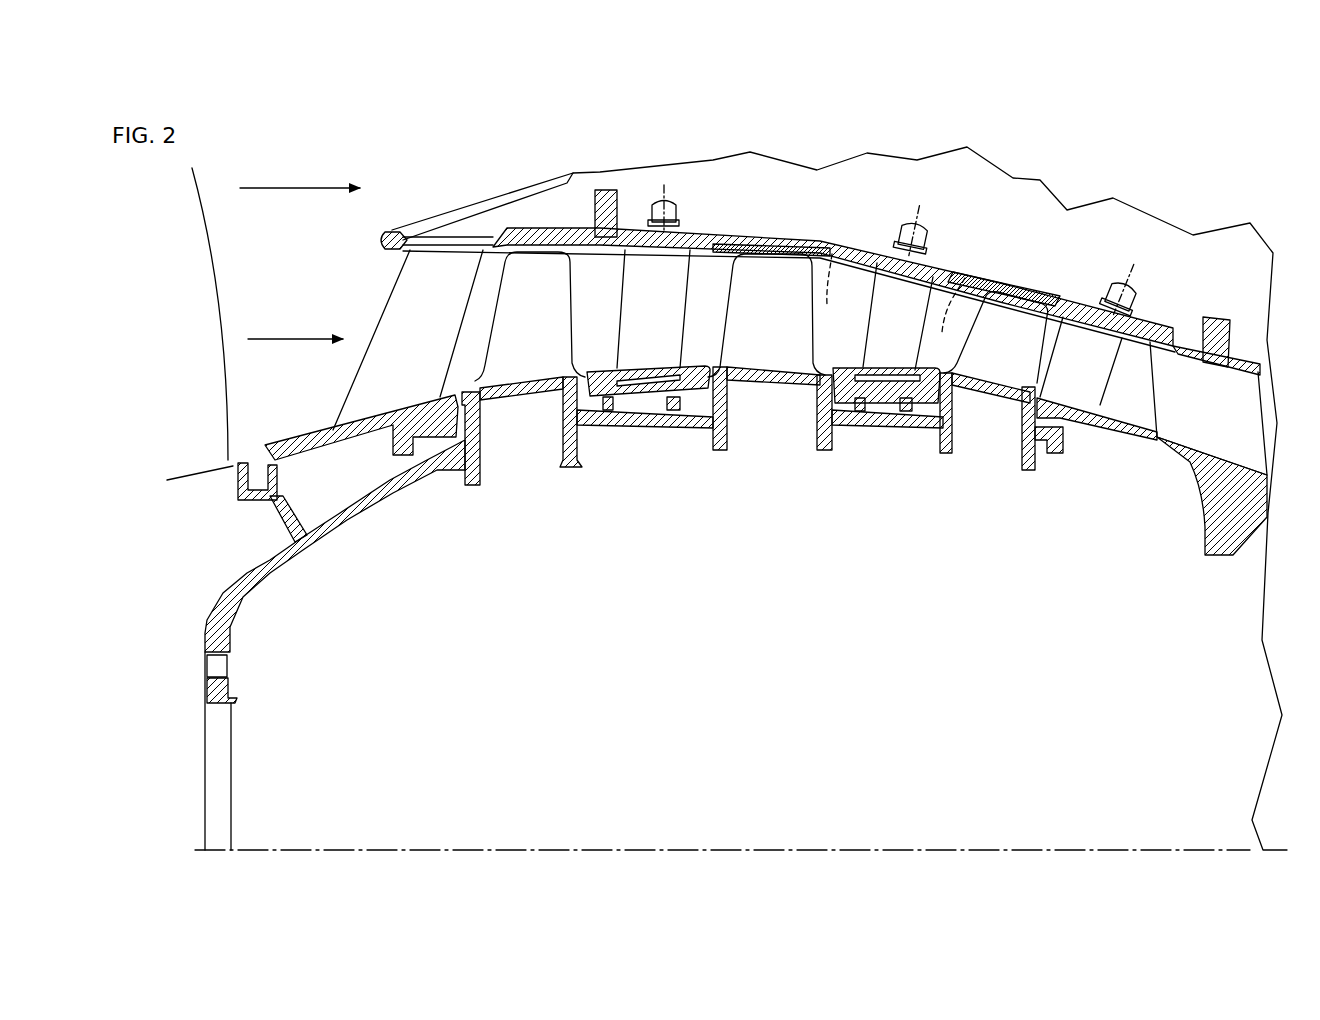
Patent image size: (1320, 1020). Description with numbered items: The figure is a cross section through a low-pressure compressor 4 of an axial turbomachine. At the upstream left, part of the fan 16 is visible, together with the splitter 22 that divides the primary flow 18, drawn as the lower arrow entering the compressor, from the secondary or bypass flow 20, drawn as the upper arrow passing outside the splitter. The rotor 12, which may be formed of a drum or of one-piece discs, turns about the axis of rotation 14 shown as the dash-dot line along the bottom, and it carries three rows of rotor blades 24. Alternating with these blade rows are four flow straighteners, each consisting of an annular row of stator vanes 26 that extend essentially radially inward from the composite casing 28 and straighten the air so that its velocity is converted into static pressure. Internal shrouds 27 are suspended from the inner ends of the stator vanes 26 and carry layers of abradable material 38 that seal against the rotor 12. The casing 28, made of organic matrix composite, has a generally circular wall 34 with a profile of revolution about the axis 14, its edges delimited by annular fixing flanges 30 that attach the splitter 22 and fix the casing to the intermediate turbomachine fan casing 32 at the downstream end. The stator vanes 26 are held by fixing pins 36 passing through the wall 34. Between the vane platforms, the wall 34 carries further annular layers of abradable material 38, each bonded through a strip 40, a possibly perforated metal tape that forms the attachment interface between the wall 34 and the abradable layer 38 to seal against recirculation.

The low-pressure compressor 4 is at (1198, 180).
The rotor 12 is at (233, 650).
The axis of rotation 14 is at (862, 848).
The fan 16 is at (196, 339).
The primary flow 18 is at (295, 322).
The secondary or bypass flow 20 is at (300, 171).
The splitter 22 is at (380, 244).
The rotor blades 24 is at (541, 339).
The stator vanes 26 is at (430, 349).
The internal shrouds 27 is at (306, 437).
The composite casing 28 is at (1057, 180).
The fixing flanges 30 is at (605, 189).
The intermediate turbomachine fan casing 32 is at (1216, 556).
The wall 34 is at (841, 240).
The fixing pins 36 is at (680, 211).
The layers of abradable material 38 is at (746, 256).
The strips 40 is at (892, 304).